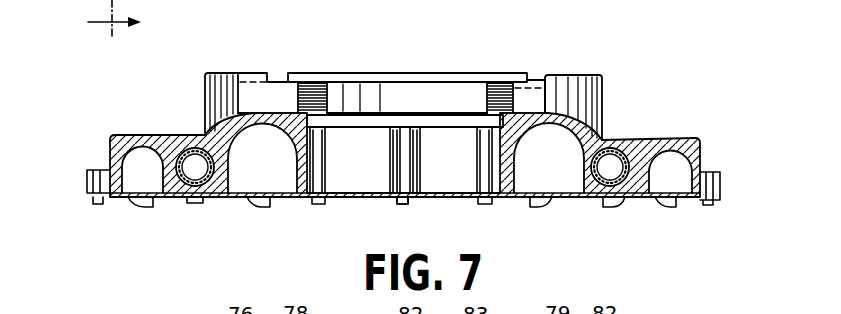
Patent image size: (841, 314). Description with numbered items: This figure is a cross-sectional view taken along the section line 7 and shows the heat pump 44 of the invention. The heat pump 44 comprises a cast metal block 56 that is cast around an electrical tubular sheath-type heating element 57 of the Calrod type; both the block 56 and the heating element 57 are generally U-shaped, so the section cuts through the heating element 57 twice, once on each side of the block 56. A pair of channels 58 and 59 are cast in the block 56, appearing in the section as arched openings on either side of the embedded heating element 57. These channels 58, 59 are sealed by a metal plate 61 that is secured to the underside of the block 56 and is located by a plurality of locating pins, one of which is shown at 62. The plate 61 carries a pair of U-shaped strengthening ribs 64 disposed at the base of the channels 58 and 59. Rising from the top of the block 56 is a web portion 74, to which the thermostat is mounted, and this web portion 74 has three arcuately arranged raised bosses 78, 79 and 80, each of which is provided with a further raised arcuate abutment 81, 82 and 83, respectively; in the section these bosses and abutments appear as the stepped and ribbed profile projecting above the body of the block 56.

The section line 7 is at (101, 18).
The heat pump 44 is at (668, 93).
The cast metal block 56 is at (692, 137).
The heating element 57 is at (197, 148).
The channel 58 is at (155, 178).
The channel 59 is at (278, 173).
The metal plate 61 is at (195, 206).
The locating pin 62 is at (401, 206).
The strengthening rib 64 is at (138, 207).
The web portion 74 is at (434, 128).
The raised boss 78 is at (279, 73).
The raised boss 79 is at (538, 80).
The raised boss 80 is at (431, 80).
The raised arcuate abutment 81 is at (238, 73).
The raised arcuate abutment 82 is at (586, 75).
The raised arcuate abutment 83 is at (404, 73).